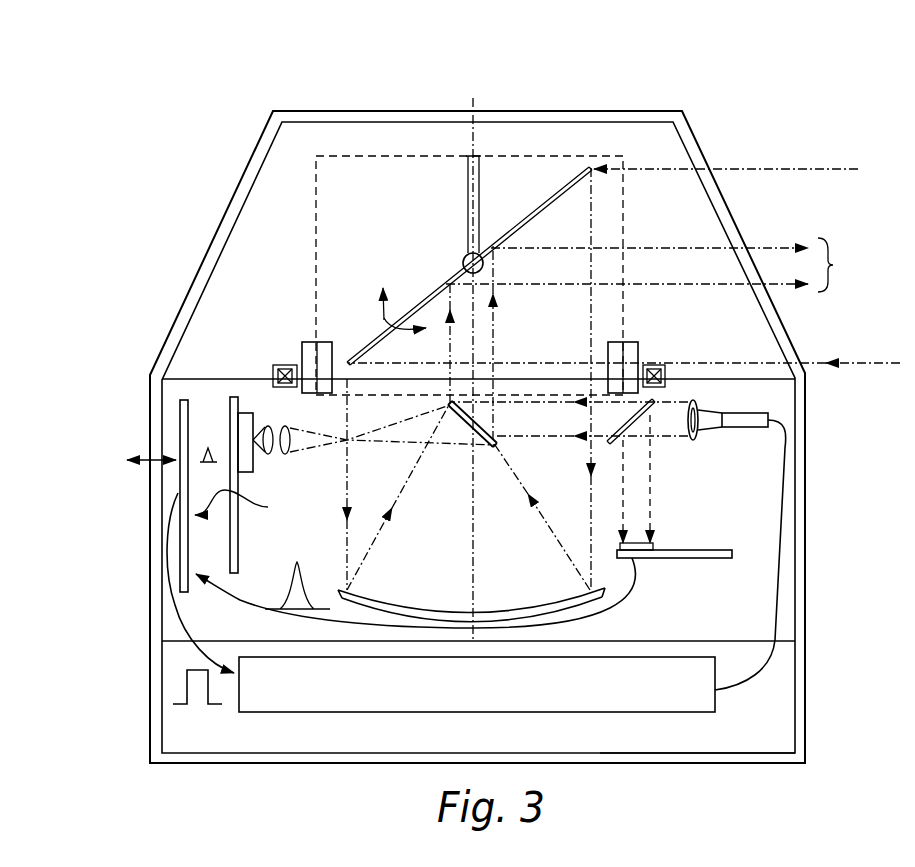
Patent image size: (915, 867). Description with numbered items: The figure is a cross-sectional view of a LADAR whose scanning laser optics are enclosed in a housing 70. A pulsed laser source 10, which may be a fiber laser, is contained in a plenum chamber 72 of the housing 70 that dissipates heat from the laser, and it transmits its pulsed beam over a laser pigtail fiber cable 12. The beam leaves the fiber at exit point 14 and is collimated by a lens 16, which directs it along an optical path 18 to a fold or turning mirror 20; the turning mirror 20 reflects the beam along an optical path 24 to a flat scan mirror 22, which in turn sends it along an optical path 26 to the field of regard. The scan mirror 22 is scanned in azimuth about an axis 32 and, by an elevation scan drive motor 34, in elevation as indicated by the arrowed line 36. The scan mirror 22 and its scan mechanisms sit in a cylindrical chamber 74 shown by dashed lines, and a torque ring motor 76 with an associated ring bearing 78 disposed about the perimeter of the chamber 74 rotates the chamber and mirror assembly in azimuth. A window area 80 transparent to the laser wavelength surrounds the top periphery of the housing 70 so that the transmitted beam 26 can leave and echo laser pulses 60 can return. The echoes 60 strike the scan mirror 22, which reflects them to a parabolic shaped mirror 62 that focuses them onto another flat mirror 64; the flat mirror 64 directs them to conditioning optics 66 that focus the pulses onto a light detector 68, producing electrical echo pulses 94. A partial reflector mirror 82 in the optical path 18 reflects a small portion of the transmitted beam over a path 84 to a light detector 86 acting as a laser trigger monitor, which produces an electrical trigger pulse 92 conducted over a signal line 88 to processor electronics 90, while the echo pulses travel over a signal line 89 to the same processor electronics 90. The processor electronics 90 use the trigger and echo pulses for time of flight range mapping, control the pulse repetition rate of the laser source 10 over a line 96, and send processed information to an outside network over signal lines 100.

The pulsed laser source 10 is at (678, 657).
The laser pigtail fiber cable 12 is at (775, 538).
The exit point 14 is at (723, 430).
The lens 16 is at (698, 402).
The optical path 18 is at (560, 437).
The fold or turning mirror 20 is at (490, 410).
The flat scan mirror 22 is at (547, 201).
The optical path 24 is at (488, 325).
The optical path 26 is at (654, 265).
The axis 32 is at (472, 137).
The elevation scan drive motor 34 is at (463, 259).
The arrowed line 36 is at (384, 318).
The echo laser pulses 60 is at (822, 168).
The parabolic shaped mirror 62 is at (550, 605).
The flat mirror 64 is at (466, 428).
The conditioning optics 66 is at (266, 408).
The light detector 68 is at (243, 428).
The housing 70 is at (806, 600).
The chamber 72 is at (788, 722).
The chamber 74 is at (577, 156).
The torque ring motor 76 is at (302, 345).
The ring bearing 78 is at (273, 375).
The window area 80 is at (211, 234).
The partial reflector mirror 82 is at (637, 425).
The path 84 is at (642, 498).
The light detector 86 is at (690, 558).
The signal line 88 is at (263, 621).
The signal line 89 is at (245, 504).
The processor electronics 90 is at (178, 490).
The pulse 92 is at (289, 592).
The pulse 94 is at (196, 455).
The line 96 is at (168, 588).
The signal lines 100 is at (148, 458).